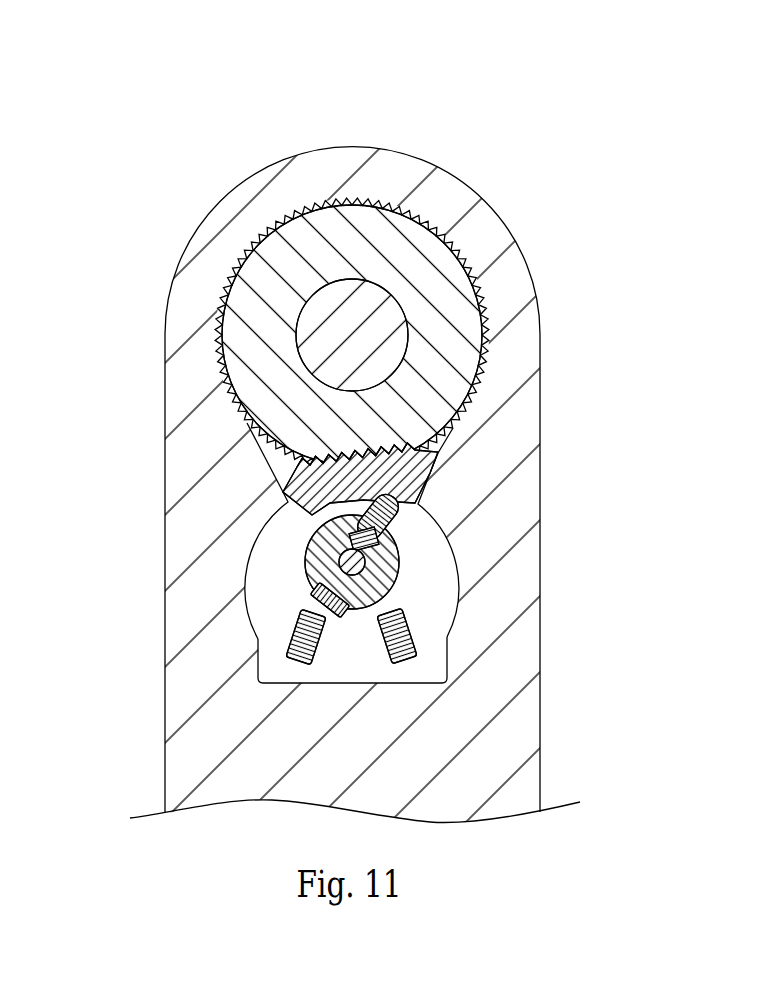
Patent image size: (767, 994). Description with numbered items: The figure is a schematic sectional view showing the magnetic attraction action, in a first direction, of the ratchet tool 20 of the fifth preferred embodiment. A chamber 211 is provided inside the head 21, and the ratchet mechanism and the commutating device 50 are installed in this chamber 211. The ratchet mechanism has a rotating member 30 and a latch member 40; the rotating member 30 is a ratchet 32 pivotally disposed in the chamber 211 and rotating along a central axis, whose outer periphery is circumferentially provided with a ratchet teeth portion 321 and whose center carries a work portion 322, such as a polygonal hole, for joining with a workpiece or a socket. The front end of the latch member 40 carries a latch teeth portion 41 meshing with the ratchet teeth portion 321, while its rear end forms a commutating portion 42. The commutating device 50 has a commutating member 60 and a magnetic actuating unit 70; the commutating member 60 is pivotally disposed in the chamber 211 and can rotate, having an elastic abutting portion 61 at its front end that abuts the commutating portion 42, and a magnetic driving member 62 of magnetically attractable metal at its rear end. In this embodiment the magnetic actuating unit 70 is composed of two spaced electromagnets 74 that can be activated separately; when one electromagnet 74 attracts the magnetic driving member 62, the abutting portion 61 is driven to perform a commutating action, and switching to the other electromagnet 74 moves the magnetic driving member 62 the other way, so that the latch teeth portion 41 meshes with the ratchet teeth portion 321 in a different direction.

The ratchet tool 20 is at (350, 434).
The head 21 is at (275, 160).
The chamber 211 is at (267, 227).
The rotating member 30 is at (431, 259).
The ratchet 32 is at (405, 256).
The ratchet teeth portion 321 is at (390, 202).
The work portion 322 is at (351, 278).
The latch member 40 is at (249, 424).
The latch teeth portion 41 is at (293, 468).
The commutating portion 42 is at (400, 495).
The commutating device 50 is at (362, 568).
The commutating member 60 is at (307, 537).
The abutting portion 61 is at (415, 515).
The magnetic driving member 62 is at (310, 590).
The magnetic actuating unit 70 is at (282, 632).
The electromagnets 74 is at (293, 652).